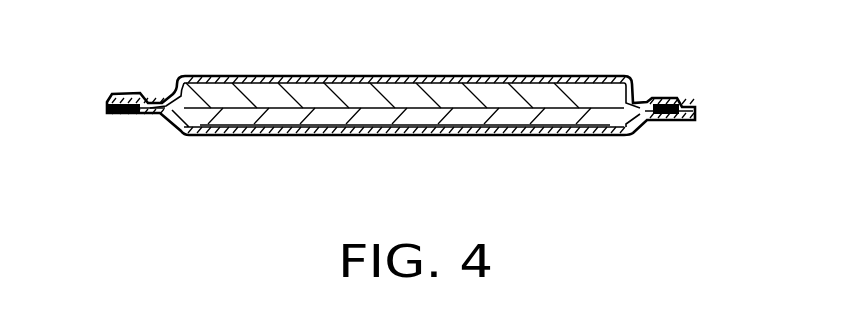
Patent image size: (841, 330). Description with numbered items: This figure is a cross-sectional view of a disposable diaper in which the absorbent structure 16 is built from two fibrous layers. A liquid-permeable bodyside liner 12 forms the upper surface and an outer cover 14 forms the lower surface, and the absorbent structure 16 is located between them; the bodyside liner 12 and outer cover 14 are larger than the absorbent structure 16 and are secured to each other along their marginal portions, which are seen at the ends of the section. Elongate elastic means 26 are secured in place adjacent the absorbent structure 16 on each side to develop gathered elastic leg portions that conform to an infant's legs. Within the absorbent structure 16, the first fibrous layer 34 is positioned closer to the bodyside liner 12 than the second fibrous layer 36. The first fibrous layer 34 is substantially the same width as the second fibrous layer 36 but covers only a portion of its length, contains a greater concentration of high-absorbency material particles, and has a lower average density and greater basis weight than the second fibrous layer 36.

The bodyside liner 12 is at (628, 78).
The outer cover 14 is at (547, 121).
The absorbent structure 16 is at (173, 97).
The elongate elastic means 26 is at (663, 120).
The first fibrous layer 34 is at (535, 90).
The second fibrous layer 36 is at (320, 113).